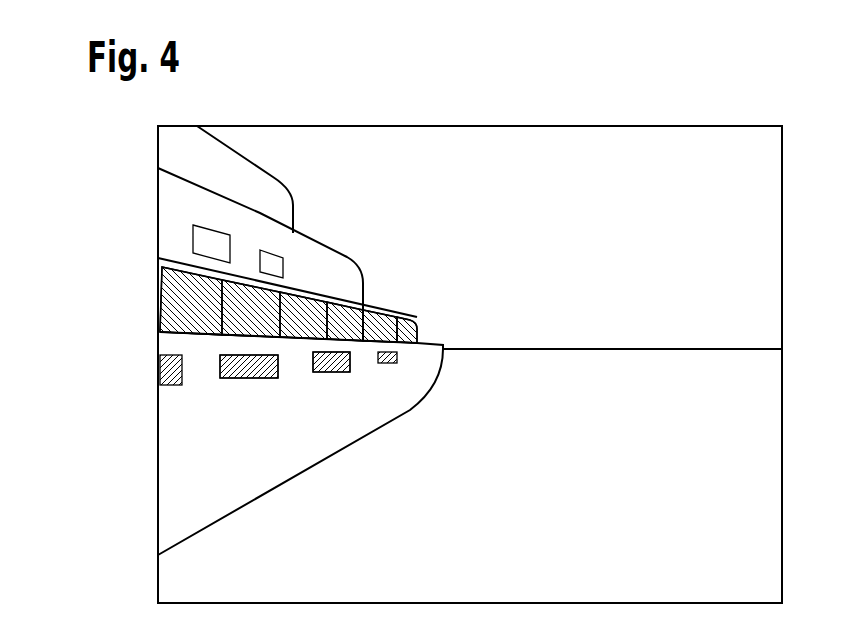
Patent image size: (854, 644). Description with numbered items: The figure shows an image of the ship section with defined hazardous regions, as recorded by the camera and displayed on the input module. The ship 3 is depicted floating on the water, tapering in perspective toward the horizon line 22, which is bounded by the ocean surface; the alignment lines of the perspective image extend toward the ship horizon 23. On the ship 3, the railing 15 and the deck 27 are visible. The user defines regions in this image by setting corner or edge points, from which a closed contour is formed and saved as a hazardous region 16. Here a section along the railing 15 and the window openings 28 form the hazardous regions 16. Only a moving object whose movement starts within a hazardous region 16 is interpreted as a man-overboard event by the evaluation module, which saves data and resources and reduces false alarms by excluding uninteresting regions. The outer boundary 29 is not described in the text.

The ship 3 is at (293, 205).
The railing 15 is at (397, 320).
The hazardous region 16 is at (205, 305).
The horizon line 22 is at (645, 349).
The ship horizon 23 is at (547, 302).
The deck 27 is at (288, 338).
The window openings 28 is at (250, 378).
The region boundary 29 is at (627, 126).